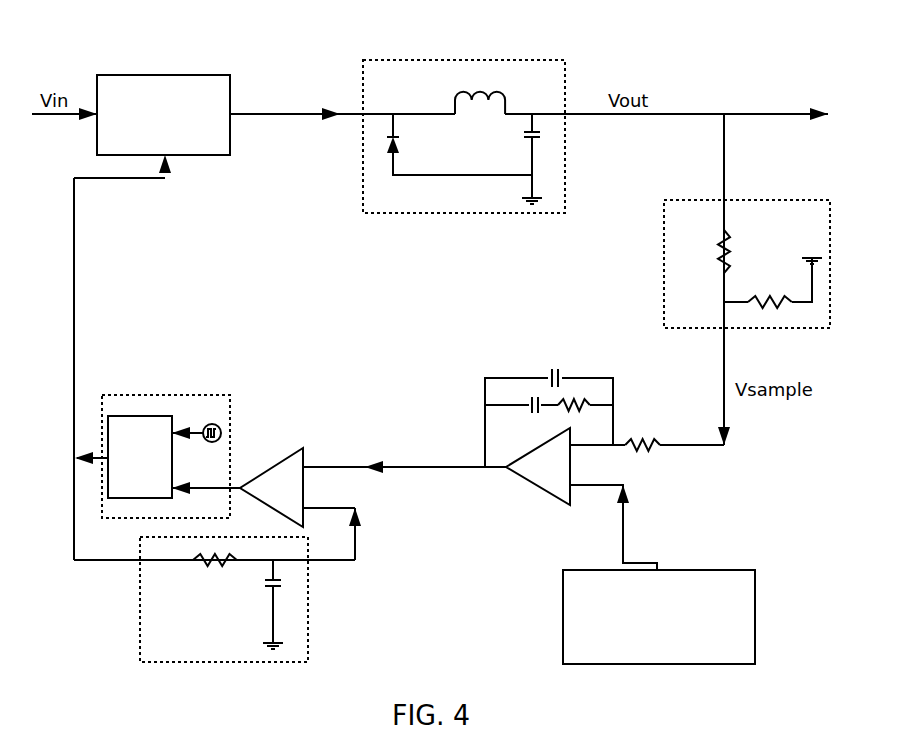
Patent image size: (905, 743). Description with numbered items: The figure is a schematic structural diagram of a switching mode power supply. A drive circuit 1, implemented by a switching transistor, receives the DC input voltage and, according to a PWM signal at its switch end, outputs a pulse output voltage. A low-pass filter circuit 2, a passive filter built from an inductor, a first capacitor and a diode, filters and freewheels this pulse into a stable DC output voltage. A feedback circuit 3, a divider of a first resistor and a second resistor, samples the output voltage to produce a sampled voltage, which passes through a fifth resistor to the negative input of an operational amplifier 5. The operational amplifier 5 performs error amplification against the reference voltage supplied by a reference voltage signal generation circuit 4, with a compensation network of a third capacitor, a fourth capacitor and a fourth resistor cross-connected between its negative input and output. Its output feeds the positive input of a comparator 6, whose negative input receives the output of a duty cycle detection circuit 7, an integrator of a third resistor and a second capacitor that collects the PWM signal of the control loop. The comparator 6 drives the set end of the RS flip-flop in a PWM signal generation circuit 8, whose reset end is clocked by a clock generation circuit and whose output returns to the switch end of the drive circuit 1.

The drive circuit 1 is at (165, 75).
The low-pass filter circuit 2 is at (470, 60).
The feedback circuit 3 is at (780, 198).
The reference voltage signal generation circuit 4 is at (757, 617).
The operational amplifier 5 is at (545, 497).
The comparator 6 is at (307, 447).
The duty cycle detection circuit 7 is at (310, 598).
The PWM signal generation circuit 8 is at (170, 393).